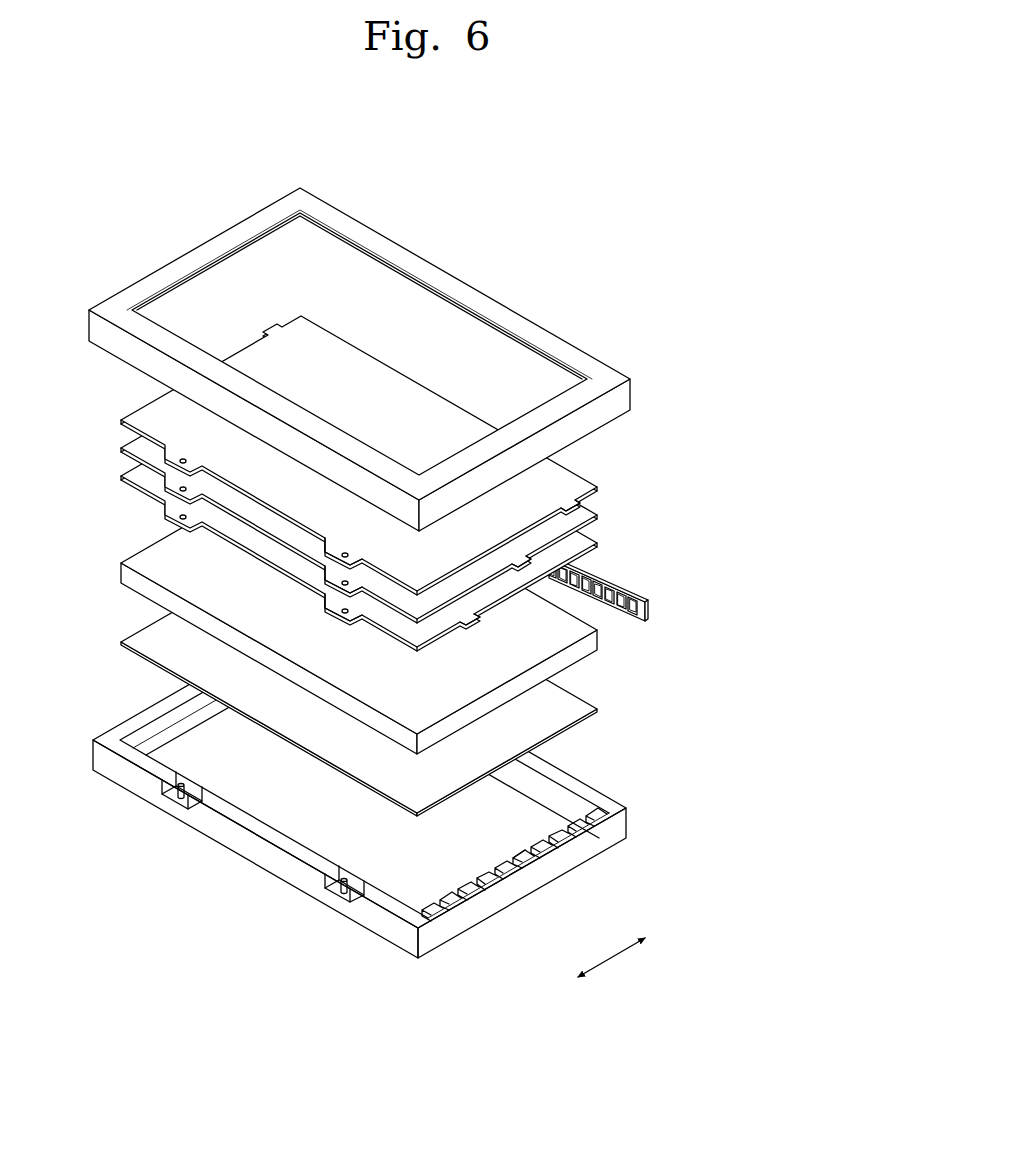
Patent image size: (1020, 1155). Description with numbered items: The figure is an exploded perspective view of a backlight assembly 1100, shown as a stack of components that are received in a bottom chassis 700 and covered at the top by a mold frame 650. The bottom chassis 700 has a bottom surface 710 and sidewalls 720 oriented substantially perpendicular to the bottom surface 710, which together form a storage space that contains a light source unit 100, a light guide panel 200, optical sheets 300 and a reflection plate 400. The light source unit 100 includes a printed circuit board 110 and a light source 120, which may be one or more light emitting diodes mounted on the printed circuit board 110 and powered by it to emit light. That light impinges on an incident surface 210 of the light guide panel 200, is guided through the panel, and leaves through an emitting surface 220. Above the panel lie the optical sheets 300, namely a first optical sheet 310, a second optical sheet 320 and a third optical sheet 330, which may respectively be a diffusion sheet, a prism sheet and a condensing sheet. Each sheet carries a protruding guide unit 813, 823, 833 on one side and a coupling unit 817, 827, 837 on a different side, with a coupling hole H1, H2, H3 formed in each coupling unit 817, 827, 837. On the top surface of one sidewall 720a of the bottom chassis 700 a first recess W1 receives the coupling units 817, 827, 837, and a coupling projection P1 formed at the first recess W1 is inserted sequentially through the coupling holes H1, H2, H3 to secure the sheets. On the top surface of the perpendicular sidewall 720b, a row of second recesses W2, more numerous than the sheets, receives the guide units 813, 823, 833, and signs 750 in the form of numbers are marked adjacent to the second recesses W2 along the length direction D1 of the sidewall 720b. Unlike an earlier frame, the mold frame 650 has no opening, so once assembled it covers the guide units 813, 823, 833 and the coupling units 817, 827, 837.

The backlight assembly 1100 is at (530, 205).
The mold frame 650 is at (520, 318).
The optical sheets 300 is at (422, 483).
The first optical sheet 310 is at (400, 455).
The second optical sheet 320 is at (400, 483).
The third optical sheet 330 is at (400, 511).
The first guide unit 813 is at (574, 504).
The second guide unit 823 is at (522, 558).
The third guide unit 833 is at (468, 614).
The first coupling unit 817 is at (325, 551).
The second coupling unit 827 is at (320, 579).
The third coupling unit 837 is at (320, 606).
The first coupling hole H1 is at (345, 552).
The second coupling hole H2 is at (346, 581).
The third coupling hole H3 is at (347, 609).
The light source unit 100 is at (635, 583).
The printed circuit board 110 is at (588, 577).
The light source 120 is at (609, 590).
The light guide panel 200 is at (418, 606).
The incident surface 210 is at (538, 647).
The emitting surface 220 is at (583, 655).
The reflection plate 400 is at (573, 712).
The bottom chassis 700 is at (423, 789).
The bottom surface 710 is at (535, 812).
The sidewalls 720 is at (401, 789).
The sidewall 720a is at (258, 852).
The sidewall 720b is at (490, 905).
The signs 750 is at (537, 863).
The coupling projection P1 is at (336, 888).
The first recess W1 is at (354, 878).
The second recess W2 is at (515, 853).
The length direction D1 is at (623, 944).